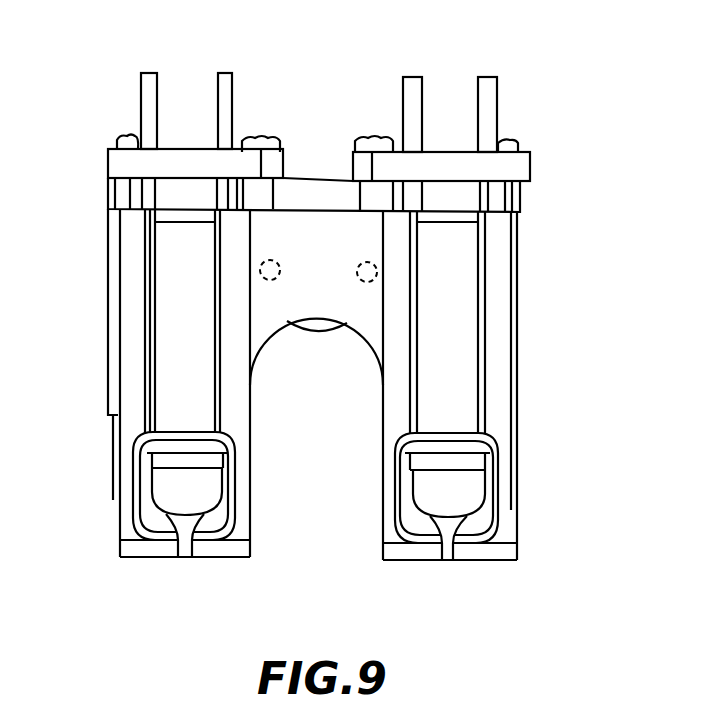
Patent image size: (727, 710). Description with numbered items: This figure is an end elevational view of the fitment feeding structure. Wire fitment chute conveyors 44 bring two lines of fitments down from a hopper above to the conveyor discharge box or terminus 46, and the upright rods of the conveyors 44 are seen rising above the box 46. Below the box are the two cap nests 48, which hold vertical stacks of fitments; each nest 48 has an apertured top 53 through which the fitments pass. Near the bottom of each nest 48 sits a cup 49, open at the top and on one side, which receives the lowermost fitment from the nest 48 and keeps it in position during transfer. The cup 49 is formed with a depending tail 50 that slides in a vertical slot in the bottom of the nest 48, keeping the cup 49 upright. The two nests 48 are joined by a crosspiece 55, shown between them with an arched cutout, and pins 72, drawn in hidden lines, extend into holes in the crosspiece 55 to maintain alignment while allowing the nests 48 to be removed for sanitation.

The wire fitment chute conveyor 44 is at (148, 72).
The conveyor discharge box 46 is at (306, 116).
The cap nest 48 is at (238, 238).
The cup 49 is at (218, 488).
The depending tail 50 is at (445, 553).
The apertured top 53 is at (455, 257).
The crosspiece 55 is at (355, 298).
The pin 72 is at (357, 268).